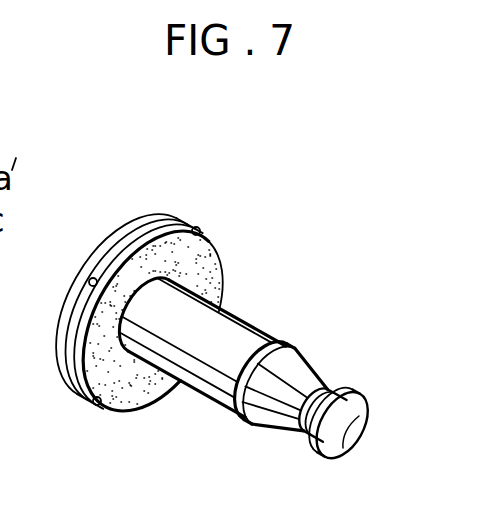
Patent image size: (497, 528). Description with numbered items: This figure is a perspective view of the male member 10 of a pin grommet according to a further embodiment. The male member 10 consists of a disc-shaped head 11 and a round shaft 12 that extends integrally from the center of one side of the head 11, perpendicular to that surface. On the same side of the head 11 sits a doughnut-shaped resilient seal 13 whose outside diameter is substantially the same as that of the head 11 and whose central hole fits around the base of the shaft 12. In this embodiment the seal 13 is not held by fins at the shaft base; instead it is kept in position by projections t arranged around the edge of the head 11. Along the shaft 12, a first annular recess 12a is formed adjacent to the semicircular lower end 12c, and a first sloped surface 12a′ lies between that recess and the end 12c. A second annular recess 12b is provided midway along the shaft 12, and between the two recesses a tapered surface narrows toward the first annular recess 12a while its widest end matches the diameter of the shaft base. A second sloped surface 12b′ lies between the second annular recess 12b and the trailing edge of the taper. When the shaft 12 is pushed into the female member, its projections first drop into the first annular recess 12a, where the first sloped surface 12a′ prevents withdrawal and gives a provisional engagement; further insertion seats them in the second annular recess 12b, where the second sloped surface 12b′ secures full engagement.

The male member 10 is at (160, 211).
The head 11 is at (62, 356).
The resilient seal 13 is at (214, 250).
The projections t is at (197, 228).
The shaft 12 is at (243, 312).
The first annular recess 12a is at (290, 371).
The first sloped surface 12a′ is at (332, 396).
The second annular recess 12b is at (222, 411).
The second sloped surface 12b′ is at (241, 409).
The semicircular lower end 12c is at (367, 433).